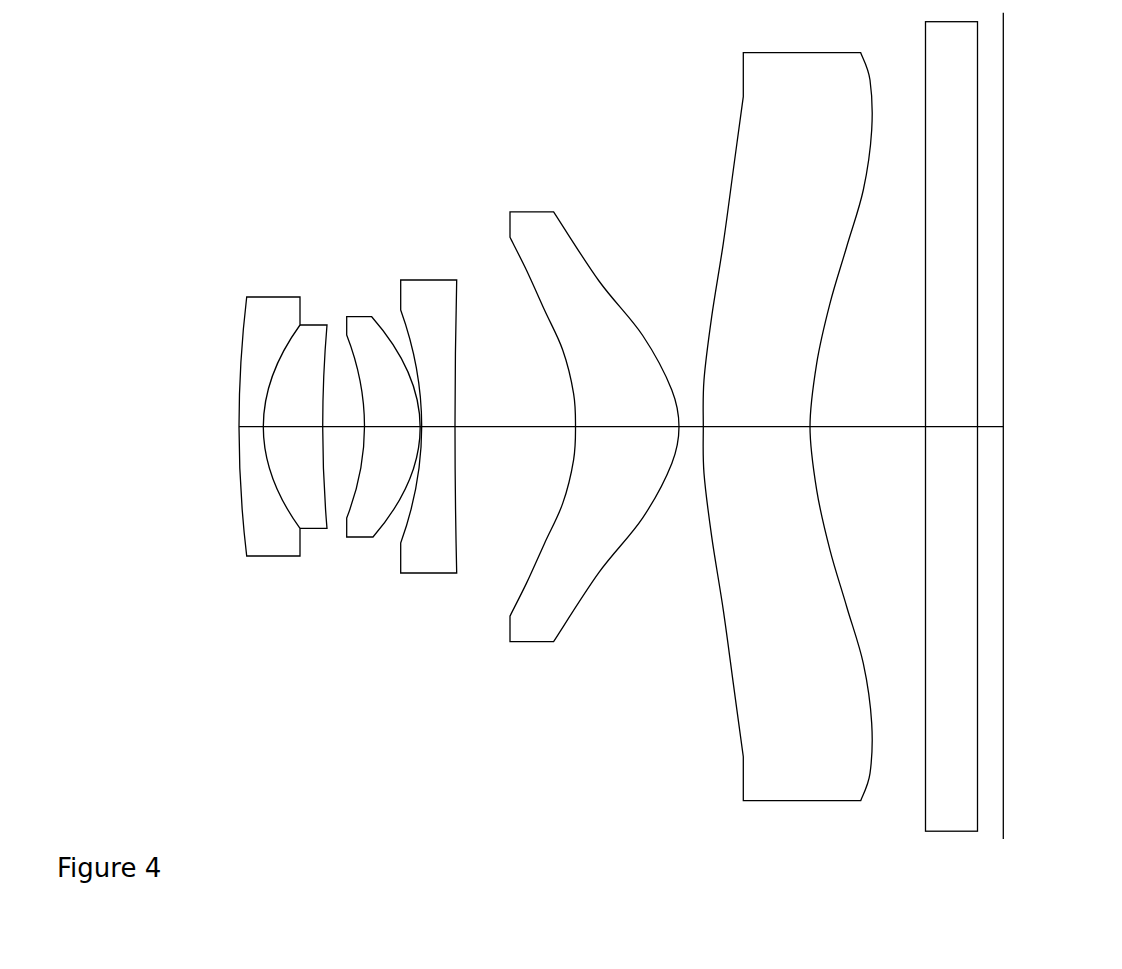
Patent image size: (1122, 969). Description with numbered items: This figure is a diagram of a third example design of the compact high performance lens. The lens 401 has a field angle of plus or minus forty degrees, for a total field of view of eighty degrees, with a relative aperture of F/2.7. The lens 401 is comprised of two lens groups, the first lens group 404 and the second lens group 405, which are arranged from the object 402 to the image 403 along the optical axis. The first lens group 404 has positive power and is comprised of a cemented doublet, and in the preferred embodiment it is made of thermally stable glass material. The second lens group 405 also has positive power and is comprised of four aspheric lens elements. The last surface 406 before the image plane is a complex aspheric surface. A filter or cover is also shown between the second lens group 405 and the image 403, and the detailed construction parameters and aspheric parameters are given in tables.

The lens 401 is at (490, 873).
The object 402 is at (142, 470).
The image 403 is at (1018, 488).
The first lens group 404 is at (269, 312).
The second lens group 405 is at (751, 218).
The last surface 406 is at (854, 316).